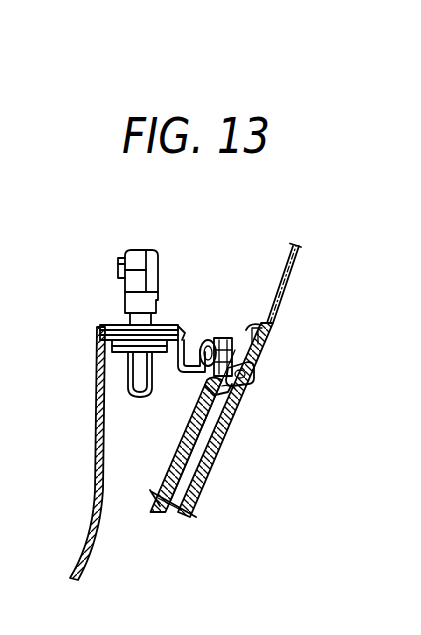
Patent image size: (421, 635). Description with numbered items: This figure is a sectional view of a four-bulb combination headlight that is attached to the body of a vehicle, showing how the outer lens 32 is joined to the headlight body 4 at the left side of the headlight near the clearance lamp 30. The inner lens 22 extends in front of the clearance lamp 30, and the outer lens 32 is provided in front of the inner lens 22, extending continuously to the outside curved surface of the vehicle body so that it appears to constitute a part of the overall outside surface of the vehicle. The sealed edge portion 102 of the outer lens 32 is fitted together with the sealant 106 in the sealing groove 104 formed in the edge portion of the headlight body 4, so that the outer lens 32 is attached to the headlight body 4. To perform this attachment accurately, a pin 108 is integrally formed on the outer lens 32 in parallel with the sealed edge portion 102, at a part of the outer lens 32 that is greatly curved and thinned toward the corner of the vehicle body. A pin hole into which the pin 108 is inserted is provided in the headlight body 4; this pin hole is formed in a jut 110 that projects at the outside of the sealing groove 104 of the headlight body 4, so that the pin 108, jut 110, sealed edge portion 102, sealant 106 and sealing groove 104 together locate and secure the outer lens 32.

The headlight body 4 is at (96, 466).
The inner lens 22 is at (190, 495).
The clearance lamp 30 is at (122, 432).
The outer lens 32 is at (228, 438).
The sealed edge portion 102 is at (224, 340).
The sealing groove 104 is at (234, 338).
The sealant 106 is at (200, 347).
The pin 108 is at (243, 328).
The jut 110 is at (253, 370).